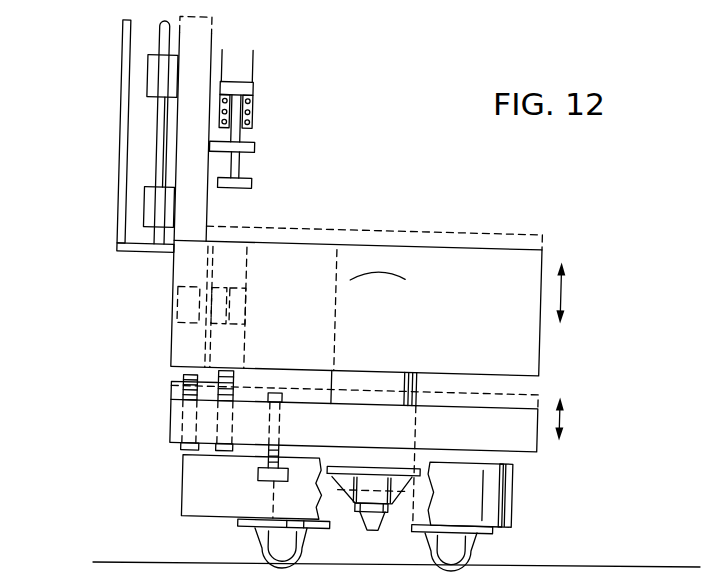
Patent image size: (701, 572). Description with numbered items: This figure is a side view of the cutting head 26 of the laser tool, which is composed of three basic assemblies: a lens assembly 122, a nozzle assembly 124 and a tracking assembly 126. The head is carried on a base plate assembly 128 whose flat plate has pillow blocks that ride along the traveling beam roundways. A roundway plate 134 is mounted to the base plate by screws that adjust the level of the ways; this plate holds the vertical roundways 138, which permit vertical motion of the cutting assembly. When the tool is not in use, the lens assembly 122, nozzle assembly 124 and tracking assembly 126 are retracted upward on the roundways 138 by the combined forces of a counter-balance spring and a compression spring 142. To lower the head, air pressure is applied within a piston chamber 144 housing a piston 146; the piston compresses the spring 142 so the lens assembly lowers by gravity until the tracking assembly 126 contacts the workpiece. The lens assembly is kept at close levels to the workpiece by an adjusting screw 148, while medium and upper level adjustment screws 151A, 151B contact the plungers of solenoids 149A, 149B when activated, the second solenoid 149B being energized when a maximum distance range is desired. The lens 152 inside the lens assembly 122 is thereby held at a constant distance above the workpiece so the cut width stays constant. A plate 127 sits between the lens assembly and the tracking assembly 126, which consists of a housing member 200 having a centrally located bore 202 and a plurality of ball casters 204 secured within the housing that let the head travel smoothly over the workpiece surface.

The cutting head 26 is at (118, 420).
The lens assembly 122 is at (550, 348).
The nozzle assembly 124 is at (426, 386).
The tracking assembly 126 is at (538, 503).
The lower mounting plate 127 is at (538, 445).
The base plate assembly 128 is at (100, 32).
The roundway plate 134 is at (112, 98).
The roundways 138 is at (153, 45).
The compression spring 142 is at (240, 113).
The piston chamber 144 is at (245, 80).
The piston 146 is at (229, 83).
The adjusting screw 148 is at (259, 470).
The solenoid 149A is at (176, 332).
The solenoid 149B is at (235, 278).
The medium level adjustment screw 151A is at (183, 429).
The upper level adjustment screw 151B is at (236, 384).
The lens 152 is at (386, 229).
The housing member 200 is at (198, 496).
The bore 202 is at (443, 468).
The ball casters 204 is at (436, 560).